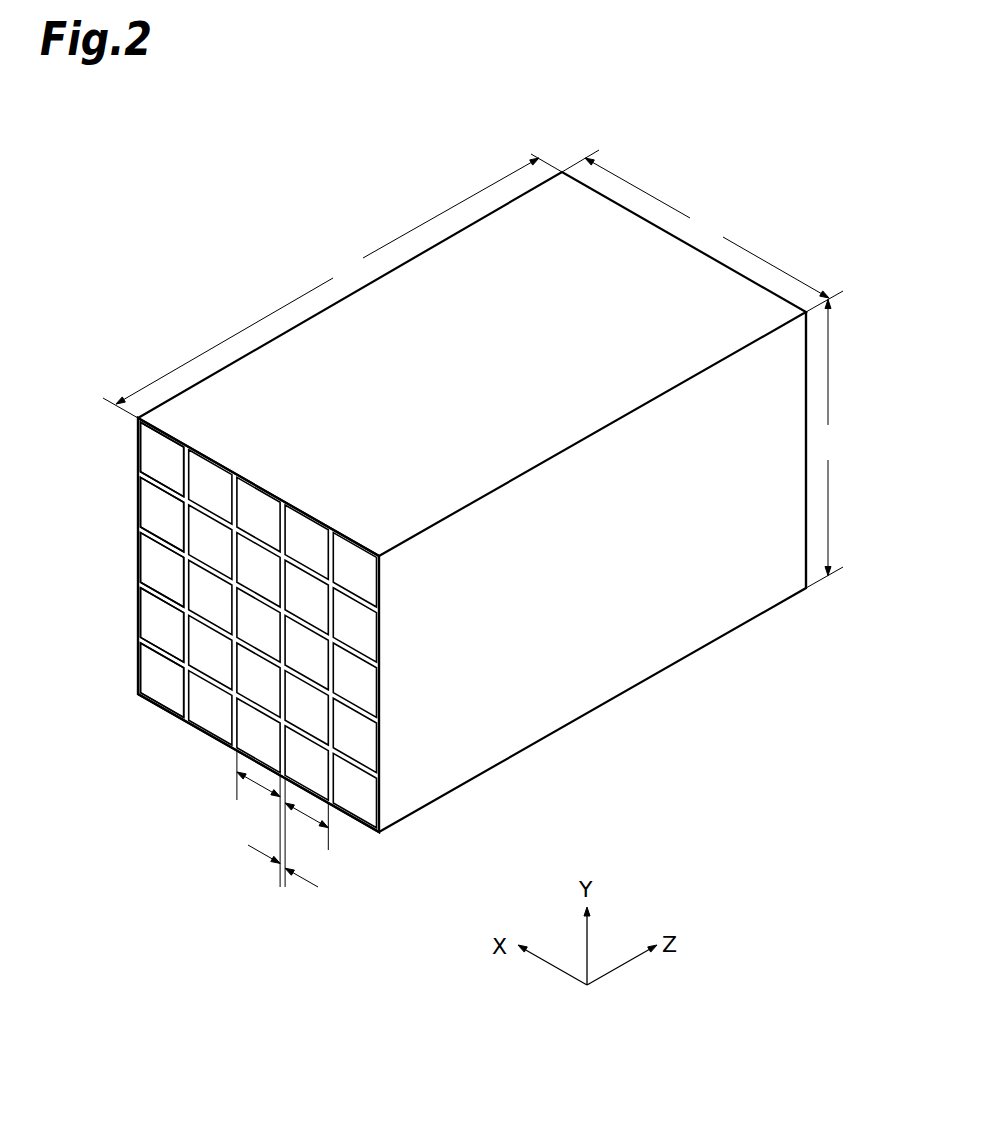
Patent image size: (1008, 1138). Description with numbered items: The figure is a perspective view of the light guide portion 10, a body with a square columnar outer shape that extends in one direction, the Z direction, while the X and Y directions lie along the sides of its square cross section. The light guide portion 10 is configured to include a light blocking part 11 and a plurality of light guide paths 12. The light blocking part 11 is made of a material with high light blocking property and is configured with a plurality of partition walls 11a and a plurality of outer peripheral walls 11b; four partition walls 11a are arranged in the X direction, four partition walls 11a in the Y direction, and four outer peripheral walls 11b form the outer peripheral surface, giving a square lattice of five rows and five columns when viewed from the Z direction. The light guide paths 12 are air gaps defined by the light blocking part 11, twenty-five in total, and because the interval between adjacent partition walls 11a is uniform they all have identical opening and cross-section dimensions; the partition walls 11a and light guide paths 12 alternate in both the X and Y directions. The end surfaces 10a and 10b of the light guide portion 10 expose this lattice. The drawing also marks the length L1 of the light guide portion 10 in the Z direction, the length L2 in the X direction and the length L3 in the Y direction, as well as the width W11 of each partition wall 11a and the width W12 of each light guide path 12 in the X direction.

The light guide portion 10 is at (622, 660).
The first end face 10a is at (360, 822).
The second end face 10b is at (809, 570).
The light blocking part 11 is at (246, 618).
The partition wall 11a is at (185, 455).
The outer peripheral wall 11b is at (152, 437).
The light guide path 12 is at (153, 457).
The length of the light guide portion in the Z direction L1 is at (332, 286).
The length of the light guide portion in the X direction L2 is at (702, 231).
The length of the light guide portion in the Y direction L3 is at (824, 444).
The width of the partition wall W11 is at (273, 835).
The width of the light guide path W12 is at (320, 855).